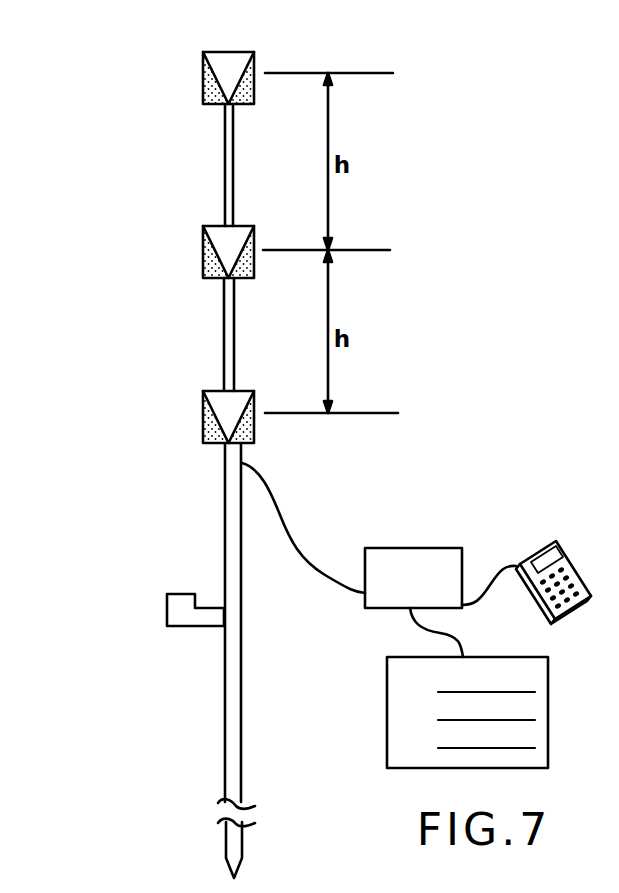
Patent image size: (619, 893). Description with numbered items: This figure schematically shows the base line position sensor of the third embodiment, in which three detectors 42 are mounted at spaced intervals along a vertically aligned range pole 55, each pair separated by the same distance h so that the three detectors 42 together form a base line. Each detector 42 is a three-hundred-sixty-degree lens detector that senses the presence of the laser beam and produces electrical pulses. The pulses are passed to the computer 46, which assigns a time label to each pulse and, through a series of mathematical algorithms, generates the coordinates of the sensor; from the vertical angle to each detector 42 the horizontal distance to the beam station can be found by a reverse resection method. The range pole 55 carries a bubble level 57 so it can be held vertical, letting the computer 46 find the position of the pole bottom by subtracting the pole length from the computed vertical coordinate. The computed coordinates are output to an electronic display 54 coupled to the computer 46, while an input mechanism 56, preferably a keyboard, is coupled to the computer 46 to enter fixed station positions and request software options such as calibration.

The 360° lens detector 42 is at (209, 104).
The computer 46 is at (416, 548).
The electronic display 54 is at (387, 737).
The range pole 55 is at (223, 568).
The input mechanism 56 is at (557, 538).
The bubble level 57 is at (167, 612).